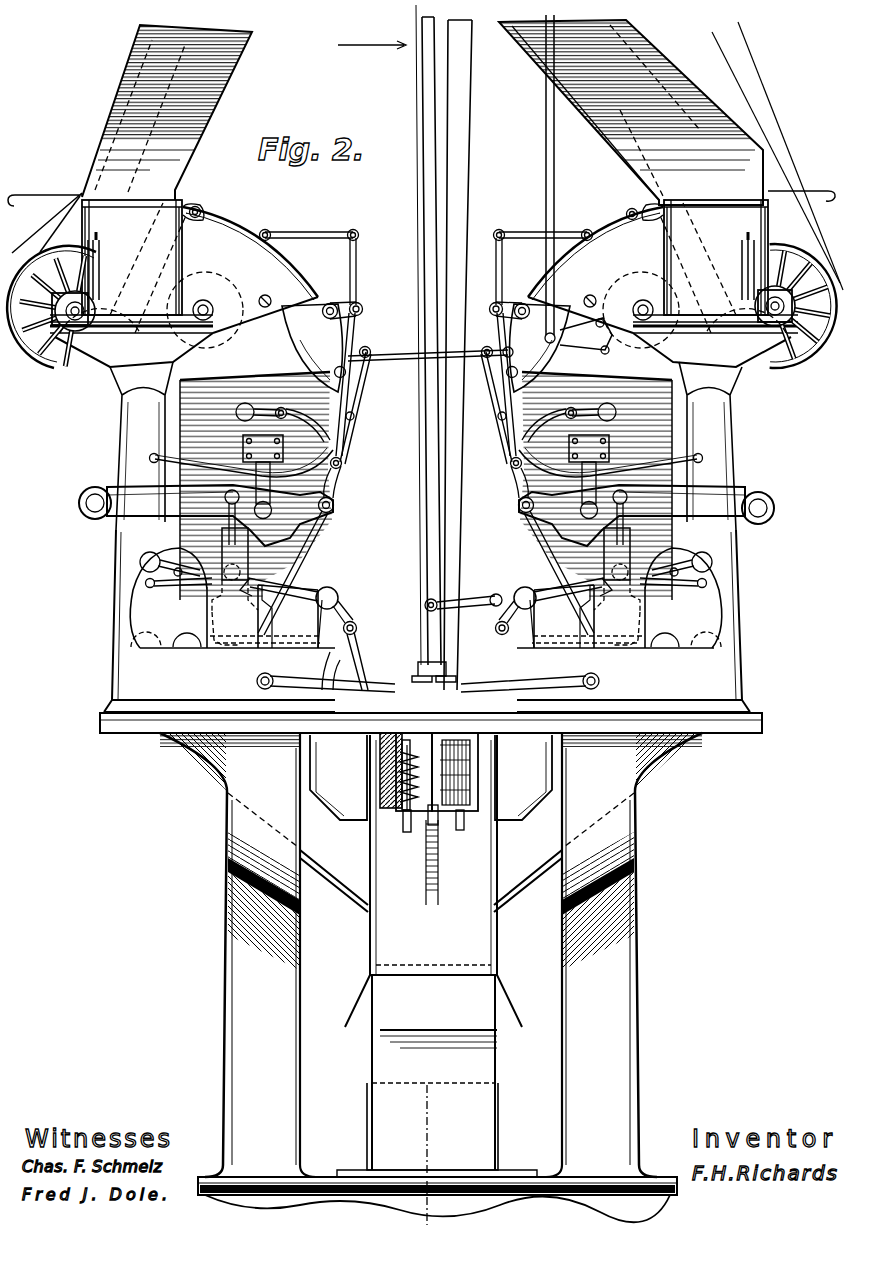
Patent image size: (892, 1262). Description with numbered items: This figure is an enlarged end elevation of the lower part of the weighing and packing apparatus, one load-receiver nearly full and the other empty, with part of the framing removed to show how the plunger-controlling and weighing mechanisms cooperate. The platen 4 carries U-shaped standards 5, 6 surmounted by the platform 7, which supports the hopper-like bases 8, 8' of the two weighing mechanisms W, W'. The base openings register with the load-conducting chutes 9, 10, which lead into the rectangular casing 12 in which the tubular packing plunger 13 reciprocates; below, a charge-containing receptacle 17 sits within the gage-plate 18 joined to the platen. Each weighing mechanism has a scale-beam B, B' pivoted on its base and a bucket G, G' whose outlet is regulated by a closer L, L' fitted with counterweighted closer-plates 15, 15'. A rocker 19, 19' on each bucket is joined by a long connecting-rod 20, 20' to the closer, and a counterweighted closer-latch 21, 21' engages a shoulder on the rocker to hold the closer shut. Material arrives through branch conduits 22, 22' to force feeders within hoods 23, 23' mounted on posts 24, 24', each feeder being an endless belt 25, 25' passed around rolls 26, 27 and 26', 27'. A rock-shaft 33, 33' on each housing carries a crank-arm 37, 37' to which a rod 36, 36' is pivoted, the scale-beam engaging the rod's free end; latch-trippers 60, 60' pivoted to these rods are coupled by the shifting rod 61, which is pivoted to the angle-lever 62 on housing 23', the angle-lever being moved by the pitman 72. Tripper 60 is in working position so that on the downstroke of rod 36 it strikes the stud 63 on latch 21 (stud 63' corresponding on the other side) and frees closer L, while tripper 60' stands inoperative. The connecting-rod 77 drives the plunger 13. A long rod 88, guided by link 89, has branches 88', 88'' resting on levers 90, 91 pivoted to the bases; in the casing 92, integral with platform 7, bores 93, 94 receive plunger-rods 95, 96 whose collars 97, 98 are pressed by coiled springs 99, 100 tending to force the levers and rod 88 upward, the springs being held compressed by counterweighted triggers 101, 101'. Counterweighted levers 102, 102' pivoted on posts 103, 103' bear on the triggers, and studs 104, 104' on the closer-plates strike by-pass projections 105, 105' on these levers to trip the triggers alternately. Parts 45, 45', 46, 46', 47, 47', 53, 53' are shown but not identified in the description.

The platen or receptacle support 4 is at (312, 1183).
The U-shaped standard 5 is at (238, 955).
The U-shaped standard 6 is at (624, 955).
The shelf or platform 7 is at (625, 724).
The base 8 is at (208, 621).
The base 8' is at (646, 621).
The load-conducting chute 9 is at (336, 866).
The load-conducting chute 10 is at (524, 872).
The casing 12 is at (388, 935).
The packing device or plunger 13 is at (330, 686).
The counterweighted end plate 15 is at (146, 598).
The counterweighted closer-plate 15' is at (714, 598).
The charge-containing receptacle 17 is at (433, 1072).
The gage-plate 18 is at (502, 1103).
The rocker 19 is at (312, 348).
The rocker 19' is at (540, 348).
The connecting-rod 20 is at (304, 498).
The connecting-rod 20' is at (552, 498).
The closer-latch 21 is at (283, 410).
The closer-latch 21' is at (578, 406).
The branch pipe or conduit 22 is at (167, 112).
The branch pipe or conduit 22' is at (631, 112).
The housing or hood 23 is at (184, 283).
The housing or hood 23' is at (663, 283).
The post 24 is at (122, 446).
The post 24' is at (726, 446).
The endless feed belt or apron 25 is at (133, 268).
The endless feed belt or apron 25' is at (722, 268).
The supporting roll or drum 26 is at (210, 310).
The supporting roll or drum 26' is at (641, 298).
The supporting roll or drum 27 is at (93, 259).
The supporting roll or drum 27' is at (773, 259).
The rock-shaft 33 is at (327, 290).
The rock-shaft 33' is at (499, 305).
The rod 36 is at (365, 384).
The rod 36' is at (493, 384).
The crank-arm 37 is at (318, 275).
The crank-arm 37' is at (541, 275).
The hand wheel 45 is at (51, 318).
The hand wheel 45' is at (796, 317).
The rod 46 is at (52, 224).
The rod 46' is at (776, 157).
The rod 47 is at (45, 223).
The rod 47' is at (790, 156).
The lug 53 is at (200, 201).
The lug 53' is at (626, 201).
The latch-tripper 60 is at (366, 408).
The latch-tripper 60' is at (491, 408).
The shifting rod or link 61 is at (392, 357).
The angle-lever 62 is at (585, 300).
The pin or stud 63 is at (260, 467).
The pin or stud 63' is at (591, 462).
The pitman or rod 72 is at (545, 178).
The connecting-rod 77 is at (468, 152).
The rod 88 is at (406, 335).
The branch 88' is at (415, 664).
The branch 88'' is at (462, 664).
The guide or link 89 is at (468, 602).
The lever 90 is at (340, 662).
The lever 91 is at (534, 684).
The chambered casing 92 is at (396, 778).
The bore 93 is at (392, 746).
The bore 94 is at (470, 814).
The plunger-rod 95 is at (404, 826).
The plunger-rod 96 is at (460, 830).
The collar 97 is at (404, 760).
The collar 98 is at (480, 746).
The coiled spring 99 is at (398, 792).
The coiled spring 100 is at (470, 790).
The latch or trigger 101 is at (360, 613).
The latch or trigger 101' is at (488, 620).
The counterweighted lever 102 is at (302, 579).
The counterweighted lever 102' is at (552, 577).
The post 103 is at (212, 586).
The post 103' is at (657, 586).
The projection or stud 104 is at (144, 583).
The projection or stud 104' is at (711, 581).
The by-pass projection 105 is at (188, 533).
The by-pass projection 105' is at (697, 548).
The scale-beam B is at (206, 515).
The scale-beam B' is at (646, 515).
The load-receiver or bucket G is at (256, 486).
The load-receiver or bucket G' is at (584, 486).
The closer L is at (292, 624).
The closer L' is at (560, 624).
The weighing mechanism W is at (309, 550).
The weighing mechanism W' is at (540, 550).